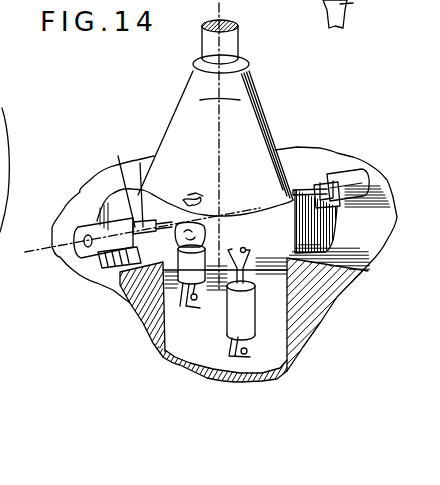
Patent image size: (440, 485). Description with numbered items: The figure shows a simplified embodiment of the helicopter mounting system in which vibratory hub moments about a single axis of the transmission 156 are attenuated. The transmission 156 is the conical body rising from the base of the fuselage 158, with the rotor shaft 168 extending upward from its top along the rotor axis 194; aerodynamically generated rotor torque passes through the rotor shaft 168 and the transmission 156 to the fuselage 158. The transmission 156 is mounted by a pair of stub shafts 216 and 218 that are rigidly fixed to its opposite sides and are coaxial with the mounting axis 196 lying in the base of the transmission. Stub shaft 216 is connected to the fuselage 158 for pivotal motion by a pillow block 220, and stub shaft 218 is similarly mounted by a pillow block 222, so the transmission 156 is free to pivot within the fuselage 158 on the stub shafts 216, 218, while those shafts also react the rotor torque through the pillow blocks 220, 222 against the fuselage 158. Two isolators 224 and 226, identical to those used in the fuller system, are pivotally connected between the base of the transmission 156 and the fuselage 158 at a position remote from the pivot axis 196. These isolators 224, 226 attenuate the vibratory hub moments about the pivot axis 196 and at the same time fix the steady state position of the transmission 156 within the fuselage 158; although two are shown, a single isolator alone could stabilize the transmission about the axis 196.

The transmission 156 is at (250, 88).
The fuselage 158 is at (142, 158).
The rotor shaft 168 is at (239, 28).
The rotor axis 194 is at (182, 100).
The mounting axis 196 is at (78, 270).
The stub shaft 216 is at (118, 156).
The stub shaft 218 is at (303, 185).
The pillow block 220 is at (90, 260).
The pillow block 222 is at (342, 177).
The isolator 224 is at (190, 260).
The isolator 226 is at (238, 312).